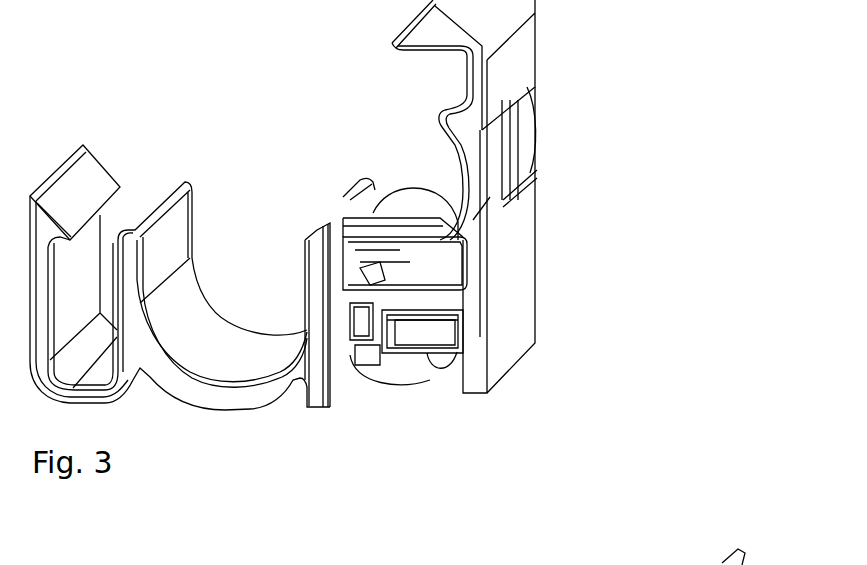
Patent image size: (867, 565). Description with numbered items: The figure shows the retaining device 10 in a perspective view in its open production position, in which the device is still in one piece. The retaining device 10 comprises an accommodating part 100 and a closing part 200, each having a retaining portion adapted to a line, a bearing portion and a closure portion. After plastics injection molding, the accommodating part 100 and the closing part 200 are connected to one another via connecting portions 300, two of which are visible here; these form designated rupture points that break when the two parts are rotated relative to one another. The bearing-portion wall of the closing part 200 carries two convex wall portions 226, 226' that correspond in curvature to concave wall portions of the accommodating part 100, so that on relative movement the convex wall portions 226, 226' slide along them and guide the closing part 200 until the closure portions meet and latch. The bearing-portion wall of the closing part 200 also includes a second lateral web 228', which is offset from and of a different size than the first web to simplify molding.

The retaining device 10 is at (627, 218).
The accommodating part 100 is at (208, 150).
The closing part 200 is at (553, 68).
The connecting portions 300 is at (412, 257).
The convex wall portion 226 is at (411, 395).
The convex wall portion 226' is at (341, 448).
The second lateral web 228' is at (519, 384).